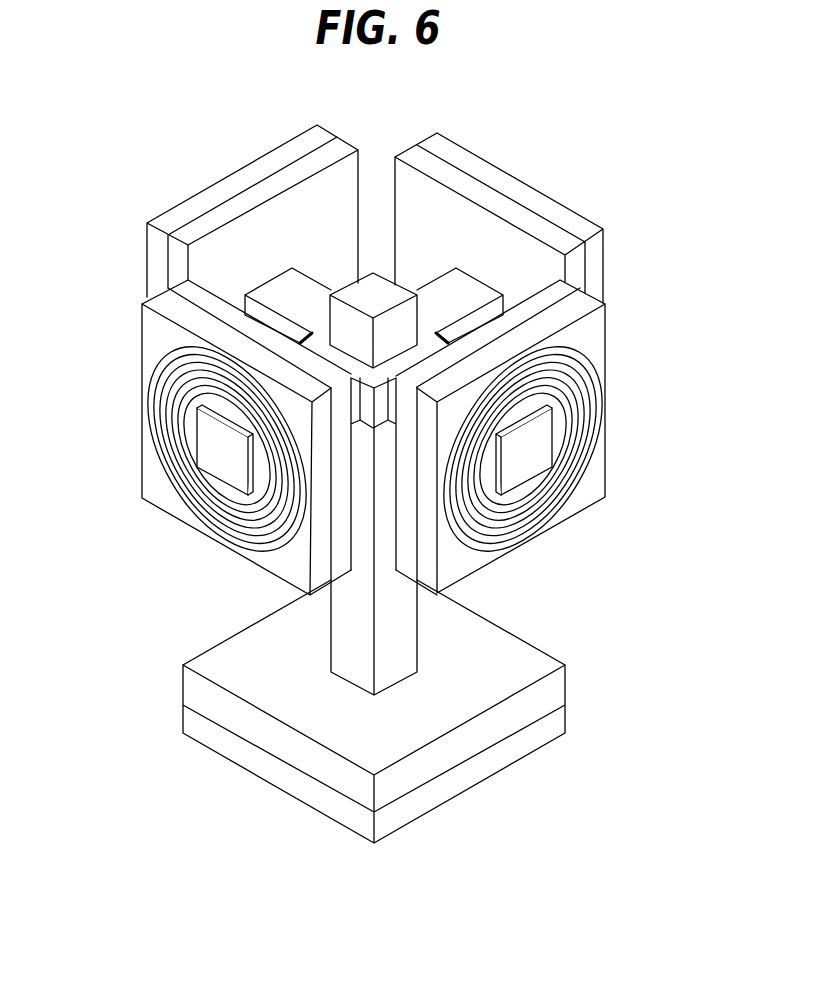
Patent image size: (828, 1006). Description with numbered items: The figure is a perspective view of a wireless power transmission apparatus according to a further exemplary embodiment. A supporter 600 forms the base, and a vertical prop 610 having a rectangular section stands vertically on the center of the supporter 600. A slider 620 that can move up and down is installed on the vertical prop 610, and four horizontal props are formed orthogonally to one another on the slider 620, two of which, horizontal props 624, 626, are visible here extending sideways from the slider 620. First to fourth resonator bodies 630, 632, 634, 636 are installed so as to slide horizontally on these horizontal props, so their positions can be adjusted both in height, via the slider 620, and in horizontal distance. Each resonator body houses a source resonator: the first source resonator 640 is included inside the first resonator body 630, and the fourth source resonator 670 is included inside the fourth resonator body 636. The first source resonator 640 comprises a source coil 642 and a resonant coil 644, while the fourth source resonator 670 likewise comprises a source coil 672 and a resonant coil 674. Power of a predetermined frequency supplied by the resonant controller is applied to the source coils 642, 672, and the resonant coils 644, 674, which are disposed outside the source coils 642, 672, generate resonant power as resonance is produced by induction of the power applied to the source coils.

The supporter 600 is at (470, 743).
The vertical prop 610 is at (373, 293).
The slider 620 is at (378, 376).
The horizontal prop 624 is at (277, 292).
The horizontal prop 626 is at (473, 290).
The first resonator body 630 is at (170, 503).
The second resonator body 632 is at (235, 180).
The third resonator body 634 is at (497, 175).
The fourth resonator body 636 is at (597, 480).
The first source resonator 640 is at (198, 449).
The source coil 642 is at (155, 407).
The resonant coil 644 is at (180, 383).
The fourth source resonator 670 is at (541, 468).
The source coil 672 is at (563, 491).
The resonant coil 674 is at (578, 402).